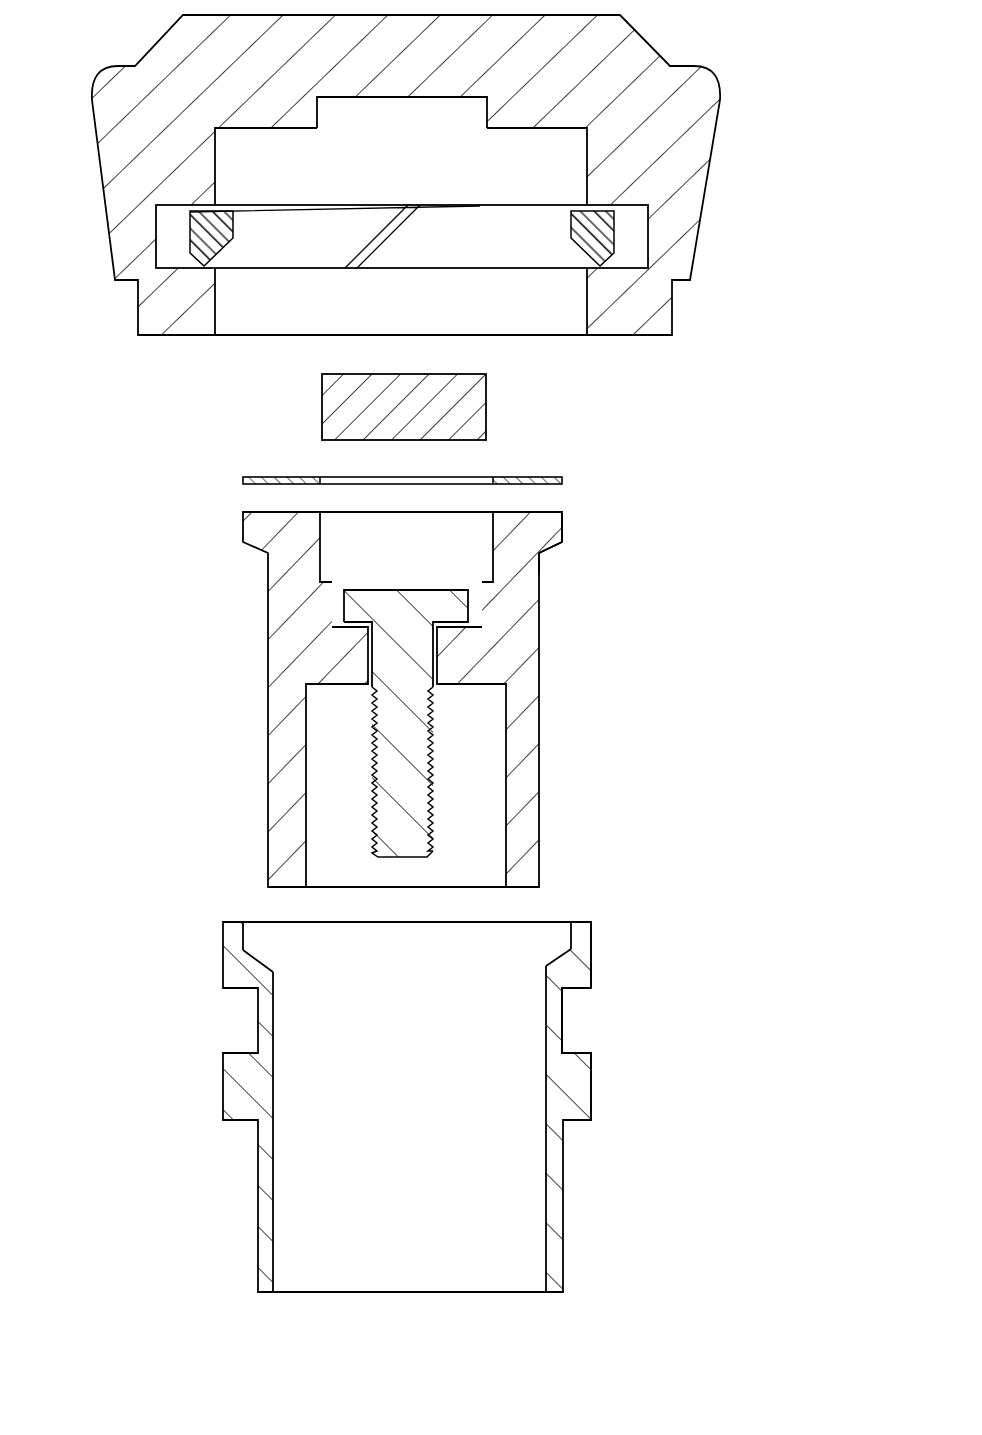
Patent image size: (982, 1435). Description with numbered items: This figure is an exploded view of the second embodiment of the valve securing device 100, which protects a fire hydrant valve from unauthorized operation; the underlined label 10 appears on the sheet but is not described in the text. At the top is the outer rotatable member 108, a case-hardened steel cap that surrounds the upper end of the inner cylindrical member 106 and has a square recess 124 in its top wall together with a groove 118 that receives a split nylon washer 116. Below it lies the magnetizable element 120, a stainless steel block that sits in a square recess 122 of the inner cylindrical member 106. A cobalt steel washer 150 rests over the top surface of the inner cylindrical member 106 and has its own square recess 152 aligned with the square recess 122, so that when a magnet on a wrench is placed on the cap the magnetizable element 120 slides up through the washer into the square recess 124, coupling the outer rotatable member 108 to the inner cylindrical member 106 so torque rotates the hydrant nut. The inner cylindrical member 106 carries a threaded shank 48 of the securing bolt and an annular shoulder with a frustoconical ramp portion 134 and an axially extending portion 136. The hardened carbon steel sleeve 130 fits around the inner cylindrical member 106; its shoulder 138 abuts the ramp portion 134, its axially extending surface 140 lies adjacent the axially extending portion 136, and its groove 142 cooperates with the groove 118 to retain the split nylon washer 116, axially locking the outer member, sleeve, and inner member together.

The valve apparatus 10 is at (153, 1254).
The valve securing device 100 is at (718, 72).
The outer rotatable member 108 is at (692, 215).
The square recess 124 is at (445, 112).
The groove 118 is at (633, 253).
The split nylon washer 116 is at (218, 243).
The magnetizable element 120 is at (475, 405).
The cobalt steel washer 150 is at (555, 483).
The square recess 152 is at (330, 478).
The inner cylindrical member 106 is at (523, 695).
The square recess 122 is at (426, 574).
The axially extending portion 136 is at (563, 517).
The frustoconical ramp portion 134 is at (547, 546).
The threaded shank 48 is at (393, 765).
The hardened carbon steel sleeve 130 is at (256, 1162).
The shoulder 138 is at (549, 956).
The axially extending surface 140 is at (570, 935).
The groove 142 is at (563, 1015).